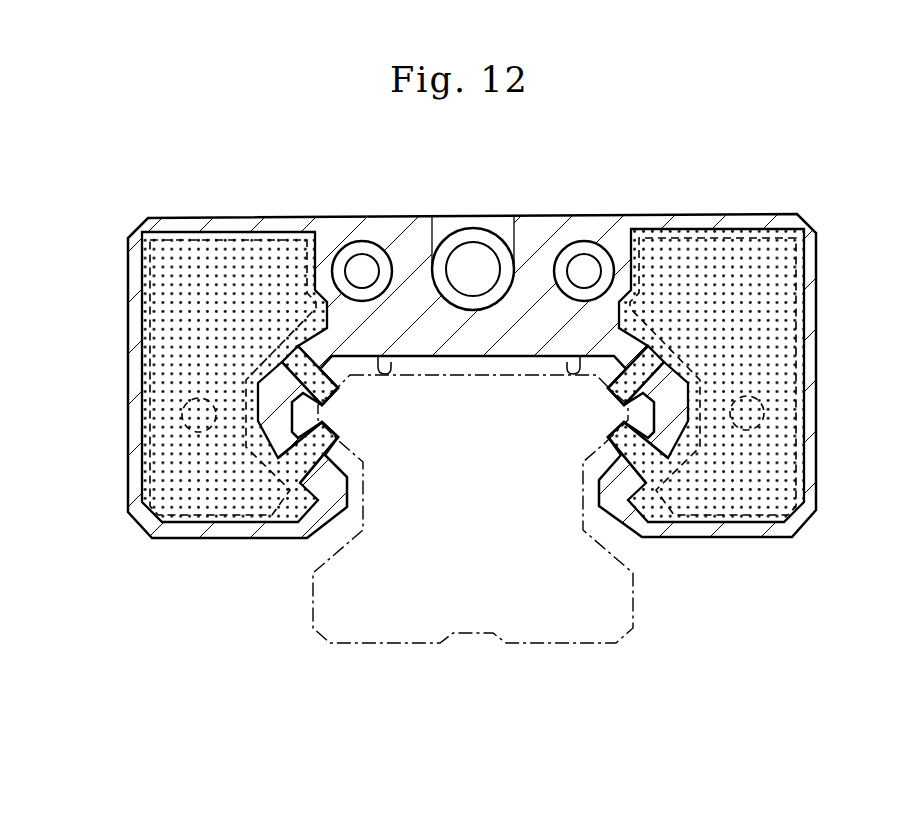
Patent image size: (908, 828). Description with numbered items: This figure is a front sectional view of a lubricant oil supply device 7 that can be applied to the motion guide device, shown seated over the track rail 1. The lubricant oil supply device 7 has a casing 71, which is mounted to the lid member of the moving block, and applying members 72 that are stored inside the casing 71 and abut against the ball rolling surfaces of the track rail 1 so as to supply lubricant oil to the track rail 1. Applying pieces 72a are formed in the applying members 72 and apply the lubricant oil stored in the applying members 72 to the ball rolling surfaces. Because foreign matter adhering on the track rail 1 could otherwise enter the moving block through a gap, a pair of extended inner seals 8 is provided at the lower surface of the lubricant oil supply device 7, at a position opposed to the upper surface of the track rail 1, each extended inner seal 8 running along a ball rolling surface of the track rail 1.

The track rail 1 is at (636, 605).
The lubricant oil supply device 7 is at (454, 382).
The casing 71 is at (257, 222).
The applying member 72 is at (176, 250).
The applying piece 72a is at (332, 400).
The extended inner seal 8 is at (390, 366).